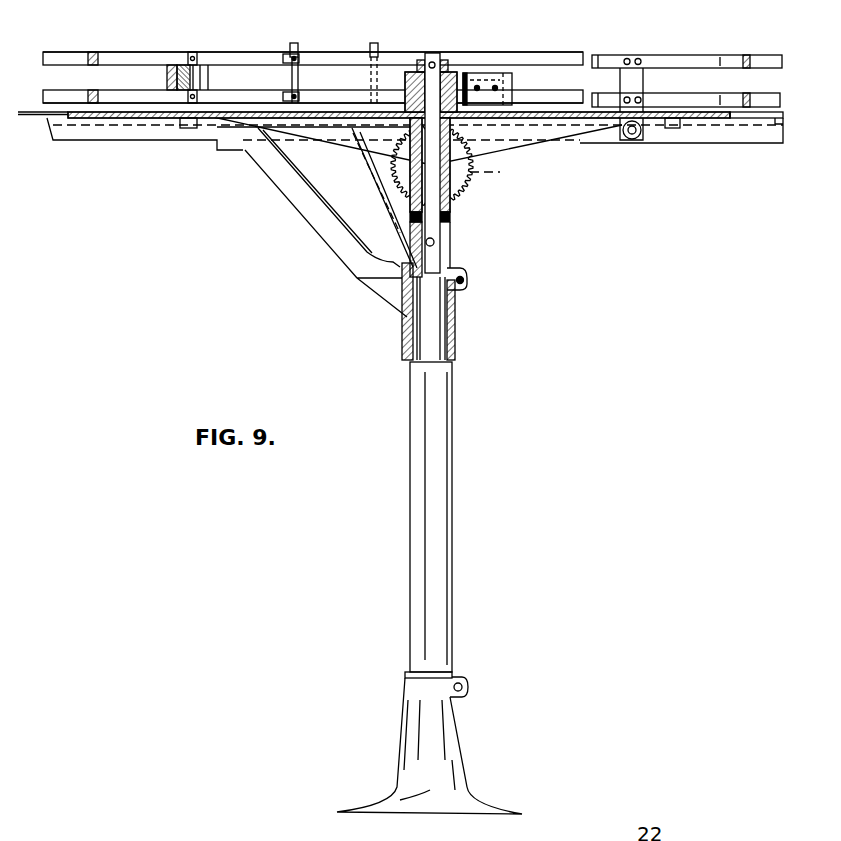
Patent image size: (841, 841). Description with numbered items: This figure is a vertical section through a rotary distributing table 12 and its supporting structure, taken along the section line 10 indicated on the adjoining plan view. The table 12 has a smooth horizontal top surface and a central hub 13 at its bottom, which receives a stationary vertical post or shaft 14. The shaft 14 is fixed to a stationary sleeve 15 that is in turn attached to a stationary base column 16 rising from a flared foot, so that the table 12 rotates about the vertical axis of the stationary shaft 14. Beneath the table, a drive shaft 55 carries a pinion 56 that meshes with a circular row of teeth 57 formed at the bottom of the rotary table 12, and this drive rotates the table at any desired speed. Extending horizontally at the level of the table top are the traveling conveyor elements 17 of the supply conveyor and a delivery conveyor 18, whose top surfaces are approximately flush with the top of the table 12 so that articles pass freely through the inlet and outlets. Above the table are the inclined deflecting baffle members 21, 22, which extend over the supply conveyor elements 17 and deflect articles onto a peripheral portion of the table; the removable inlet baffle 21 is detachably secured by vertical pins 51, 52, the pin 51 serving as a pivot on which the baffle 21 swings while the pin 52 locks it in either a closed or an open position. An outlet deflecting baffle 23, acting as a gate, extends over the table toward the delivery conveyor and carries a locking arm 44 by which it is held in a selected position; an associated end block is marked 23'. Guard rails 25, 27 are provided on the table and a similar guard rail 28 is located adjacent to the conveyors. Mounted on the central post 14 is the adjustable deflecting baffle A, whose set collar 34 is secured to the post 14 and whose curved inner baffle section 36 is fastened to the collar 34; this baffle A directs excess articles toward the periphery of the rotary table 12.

The section line 10 is at (388, 70).
The rotary table 12 is at (162, 118).
The central hub 13 is at (450, 190).
The stationary vertical post 14 is at (430, 55).
The stationary sleeve 15 is at (402, 310).
The stationary base column 16 is at (445, 518).
The traveling conveyor elements 17 is at (783, 130).
The delivery conveyor 18 is at (80, 120).
The inclined deflecting baffle member 21 is at (313, 70).
The inclined deflecting baffle member 22 is at (553, 100).
The deflecting baffle 23 is at (208, 65).
The rail end block 23' is at (76, 77).
The guard rail 25 is at (220, 100).
The guard rail 27 is at (680, 98).
The guard rail 28 is at (782, 62).
The set collar 34 is at (452, 75).
The curved inner baffle section 36 is at (487, 73).
The locking arm 44 is at (167, 76).
The vertical pin 51 is at (372, 43).
The vertical pin 52 is at (294, 43).
The drive shaft 55 is at (470, 176).
The pinion 56 is at (448, 213).
The circular row of teeth 57 is at (192, 128).
The deflecting baffle A is at (513, 84).